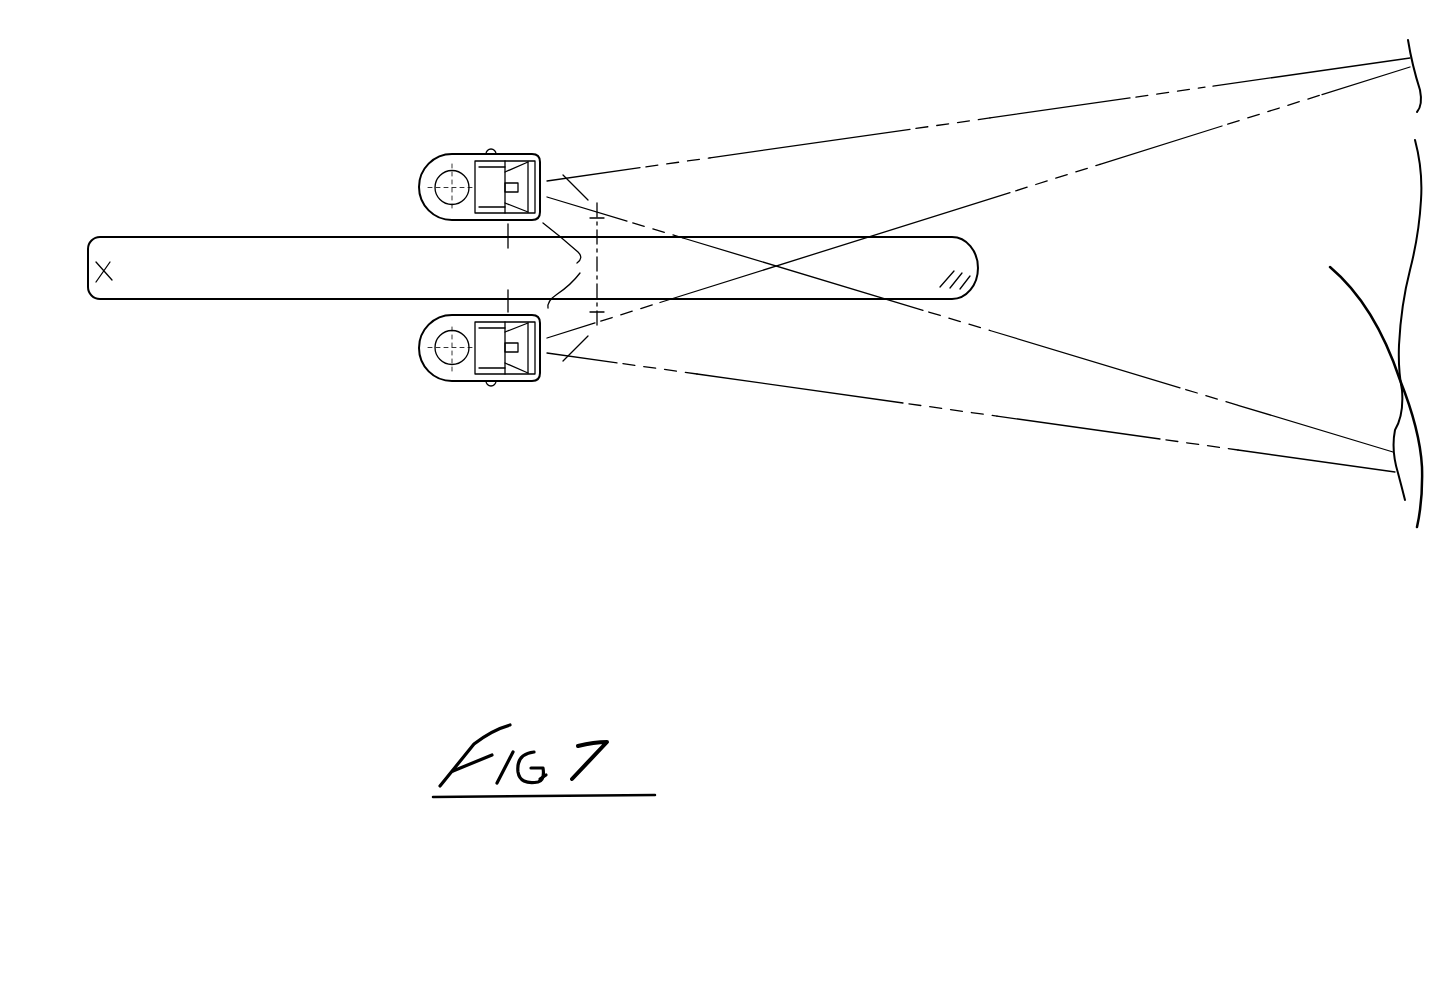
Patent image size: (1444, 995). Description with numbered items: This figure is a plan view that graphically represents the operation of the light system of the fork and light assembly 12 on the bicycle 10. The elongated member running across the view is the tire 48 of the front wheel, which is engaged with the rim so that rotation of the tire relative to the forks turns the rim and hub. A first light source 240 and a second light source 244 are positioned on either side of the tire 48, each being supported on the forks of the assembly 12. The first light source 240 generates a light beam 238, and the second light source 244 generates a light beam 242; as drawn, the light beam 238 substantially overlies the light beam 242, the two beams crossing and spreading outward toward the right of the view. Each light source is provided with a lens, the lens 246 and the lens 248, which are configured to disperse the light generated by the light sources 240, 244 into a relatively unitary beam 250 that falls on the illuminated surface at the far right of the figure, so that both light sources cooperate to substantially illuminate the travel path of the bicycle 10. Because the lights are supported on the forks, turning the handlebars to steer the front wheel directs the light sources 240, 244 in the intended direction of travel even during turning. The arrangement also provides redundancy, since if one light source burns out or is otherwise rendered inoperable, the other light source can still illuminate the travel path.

The bicycle 10 is at (312, 377).
The fork and light assembly 12 is at (578, 437).
The tire 48 is at (962, 263).
The light beam 238 is at (942, 378).
The first light source 240 is at (548, 368).
The light beam 242 is at (873, 152).
The second light source 244 is at (547, 163).
The lens 246 is at (508, 388).
The lens 248 is at (521, 154).
The unitary beam 250 is at (1384, 309).